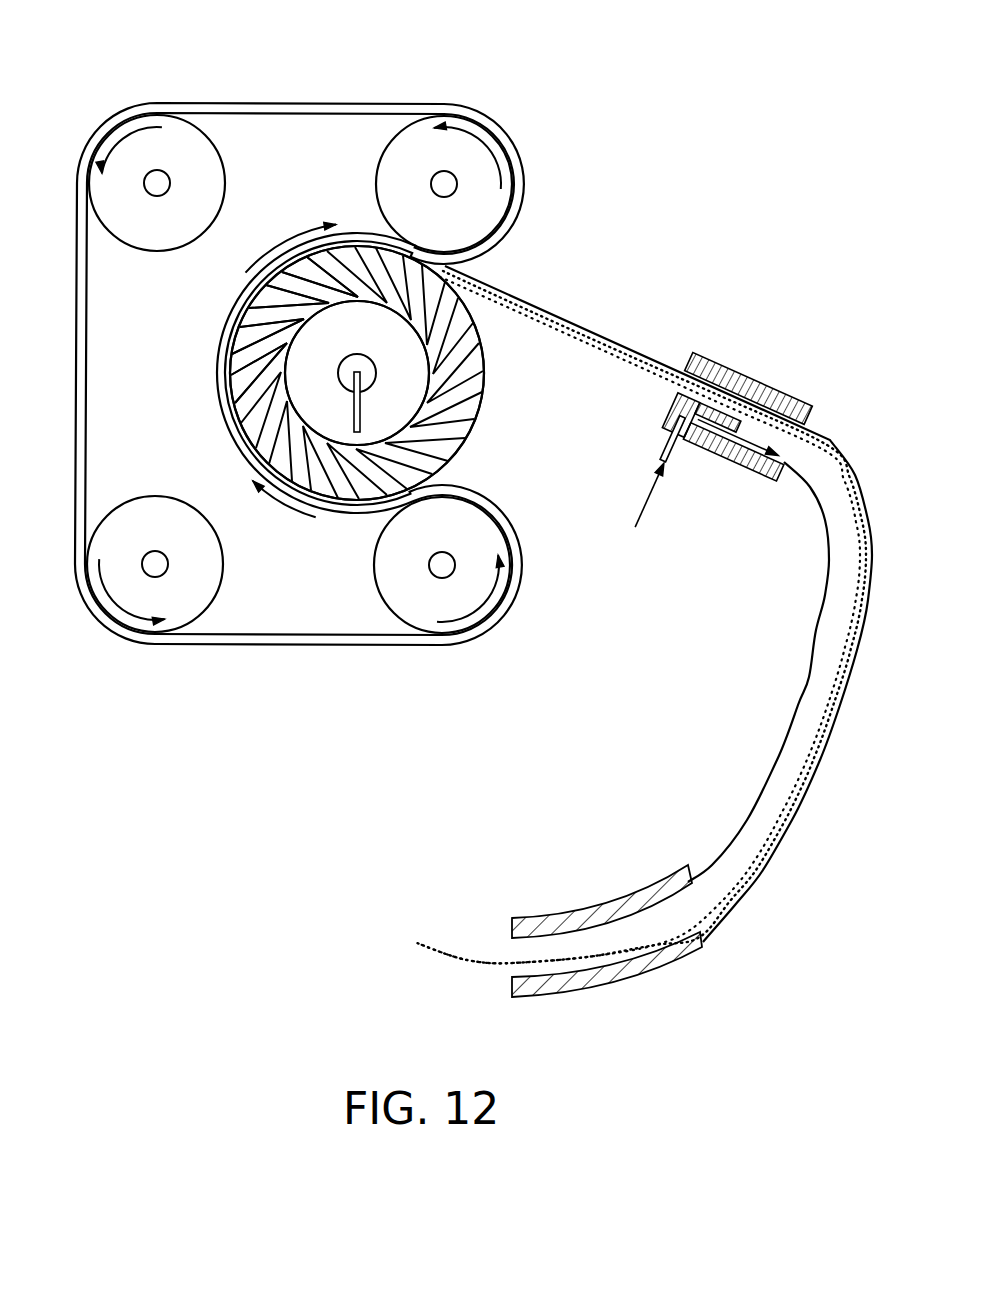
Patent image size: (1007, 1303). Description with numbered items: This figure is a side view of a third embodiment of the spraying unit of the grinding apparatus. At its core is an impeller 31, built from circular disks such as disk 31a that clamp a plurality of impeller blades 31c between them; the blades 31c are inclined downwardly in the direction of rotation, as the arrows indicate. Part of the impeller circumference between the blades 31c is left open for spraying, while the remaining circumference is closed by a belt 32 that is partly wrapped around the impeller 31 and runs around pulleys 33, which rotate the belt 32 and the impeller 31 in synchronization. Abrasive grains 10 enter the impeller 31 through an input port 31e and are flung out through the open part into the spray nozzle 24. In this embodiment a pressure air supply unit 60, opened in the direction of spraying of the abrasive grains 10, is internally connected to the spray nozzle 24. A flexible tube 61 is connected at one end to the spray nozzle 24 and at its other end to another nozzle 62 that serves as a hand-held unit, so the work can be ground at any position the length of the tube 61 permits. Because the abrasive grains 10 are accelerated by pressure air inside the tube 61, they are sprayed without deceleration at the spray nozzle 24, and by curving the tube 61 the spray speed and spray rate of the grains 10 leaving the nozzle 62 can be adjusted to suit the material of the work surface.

The abrasive grains 10 is at (233, 368).
The spray nozzle 24 is at (613, 338).
The impeller 31 is at (513, 433).
The circular disk 31a is at (455, 462).
The impeller blades 31c is at (484, 373).
The input port 31e is at (250, 305).
The belt 32 is at (507, 167).
The pulleys 33 is at (160, 125).
The pressure air supply unit 60 is at (677, 457).
The flexible tube 61 is at (777, 760).
The nozzle 62 is at (595, 902).